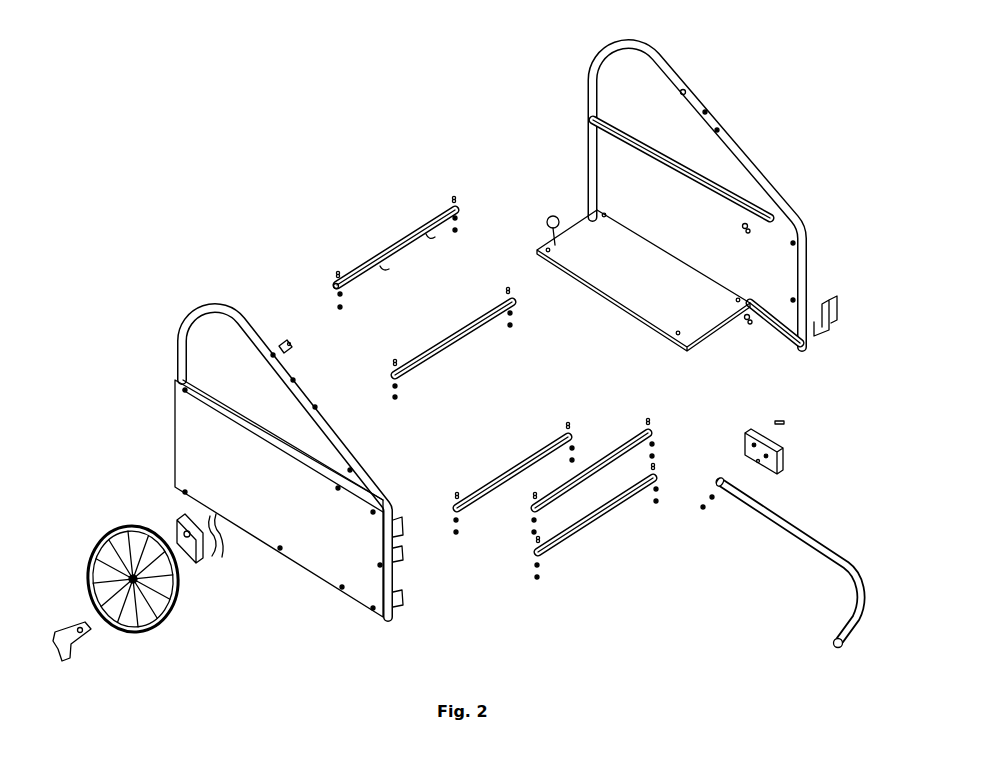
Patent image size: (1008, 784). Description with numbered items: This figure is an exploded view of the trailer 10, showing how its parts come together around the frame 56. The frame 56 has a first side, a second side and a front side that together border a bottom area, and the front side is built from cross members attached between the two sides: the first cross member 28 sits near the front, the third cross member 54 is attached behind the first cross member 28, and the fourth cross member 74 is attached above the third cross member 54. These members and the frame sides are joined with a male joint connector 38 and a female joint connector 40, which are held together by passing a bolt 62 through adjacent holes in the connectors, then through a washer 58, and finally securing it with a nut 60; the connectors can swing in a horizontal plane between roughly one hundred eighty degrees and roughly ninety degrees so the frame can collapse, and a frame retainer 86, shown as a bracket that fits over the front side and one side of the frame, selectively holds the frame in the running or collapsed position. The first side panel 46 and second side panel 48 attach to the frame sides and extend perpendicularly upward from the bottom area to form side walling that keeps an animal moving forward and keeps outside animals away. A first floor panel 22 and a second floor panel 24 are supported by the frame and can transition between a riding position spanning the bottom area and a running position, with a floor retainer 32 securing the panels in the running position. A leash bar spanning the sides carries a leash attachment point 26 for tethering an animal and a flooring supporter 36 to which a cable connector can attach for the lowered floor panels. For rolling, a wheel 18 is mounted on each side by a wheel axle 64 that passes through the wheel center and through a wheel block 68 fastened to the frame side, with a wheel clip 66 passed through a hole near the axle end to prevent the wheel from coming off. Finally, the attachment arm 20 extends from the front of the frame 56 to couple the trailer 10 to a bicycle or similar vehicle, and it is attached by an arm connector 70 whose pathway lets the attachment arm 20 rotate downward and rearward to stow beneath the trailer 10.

The trailer 10 is at (240, 170).
The wheel 18 is at (103, 617).
The attachment arm 20 is at (778, 512).
The first floor panel 22 is at (705, 325).
The second floor panel 24 is at (397, 520).
The leash attachment point 26 is at (386, 270).
The first cross member 28 is at (613, 505).
The floor retainer 32 is at (551, 216).
The flooring supporter 36 is at (413, 236).
The male joint connector 38 is at (333, 285).
The female joint connector 40 is at (284, 342).
The first side panel 46 is at (765, 287).
The second side panel 48 is at (188, 457).
The third cross member 54 is at (528, 458).
The frame 56 is at (208, 302).
The washer 58 is at (344, 296).
The nut 60 is at (341, 308).
The bolt 62 is at (339, 270).
The wheel axle 64 is at (77, 655).
The wheel clip 66 is at (225, 548).
The wheel block 68 is at (203, 558).
The arm connector 70 is at (781, 460).
The fourth cross member 74 is at (465, 338).
The frame retainer 86 is at (838, 308).